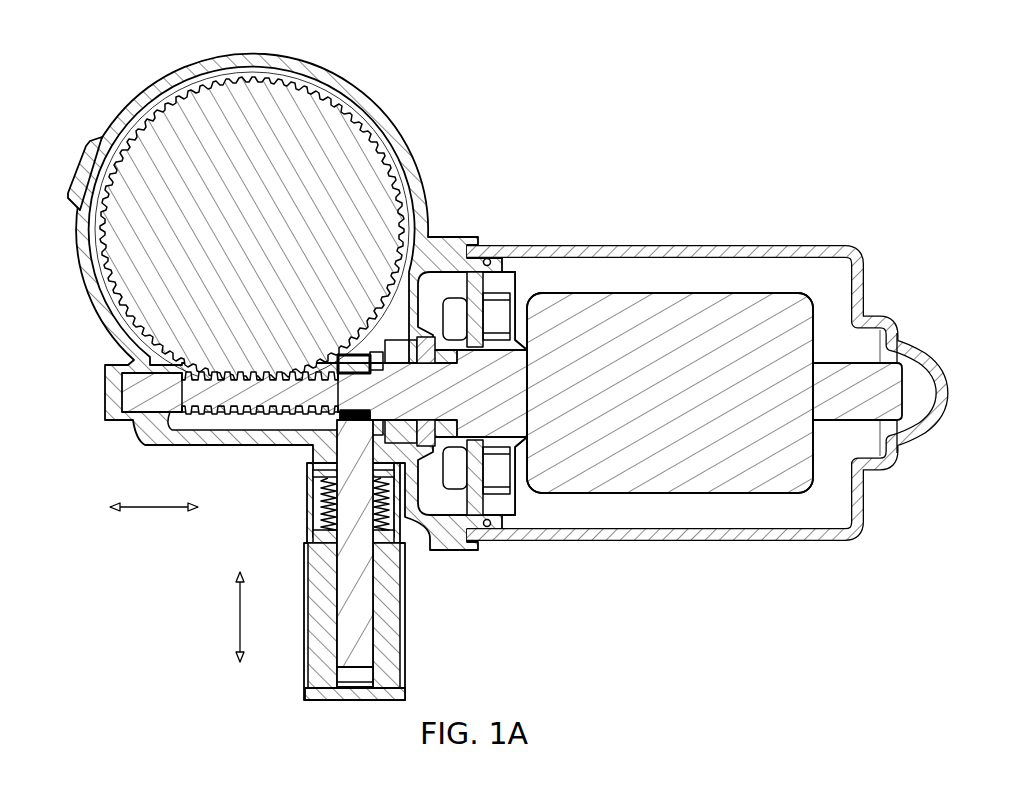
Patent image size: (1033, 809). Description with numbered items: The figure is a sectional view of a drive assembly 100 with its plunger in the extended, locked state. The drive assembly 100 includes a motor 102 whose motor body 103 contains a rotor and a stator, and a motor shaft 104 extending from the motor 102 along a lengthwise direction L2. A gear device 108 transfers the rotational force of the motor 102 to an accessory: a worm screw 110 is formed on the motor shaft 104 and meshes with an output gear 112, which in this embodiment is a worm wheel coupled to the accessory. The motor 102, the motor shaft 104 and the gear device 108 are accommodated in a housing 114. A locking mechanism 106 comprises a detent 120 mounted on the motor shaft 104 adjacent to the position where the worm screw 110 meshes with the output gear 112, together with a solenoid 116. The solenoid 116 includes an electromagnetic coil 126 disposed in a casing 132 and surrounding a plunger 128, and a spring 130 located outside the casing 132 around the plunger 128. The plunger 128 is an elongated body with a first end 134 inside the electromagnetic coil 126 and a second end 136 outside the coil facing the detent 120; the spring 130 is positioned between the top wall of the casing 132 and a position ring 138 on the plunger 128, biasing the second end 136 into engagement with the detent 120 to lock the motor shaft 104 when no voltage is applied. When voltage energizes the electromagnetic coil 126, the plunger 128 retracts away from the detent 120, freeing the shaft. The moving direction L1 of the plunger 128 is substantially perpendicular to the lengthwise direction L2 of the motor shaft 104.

The drive assembly 100 is at (512, 206).
The motor 102 is at (652, 293).
The motor body 103 is at (716, 320).
The motor shaft 104 is at (177, 395).
The locking mechanism 106 is at (303, 524).
The gear device 108 is at (73, 268).
The worm screw 110 is at (240, 395).
The output gear 112 is at (332, 130).
The housing 114 is at (828, 246).
The solenoid 116 is at (405, 589).
The detent 120 is at (344, 362).
The electromagnetic coil 126 is at (322, 608).
The plunger 128 is at (355, 566).
The spring 130 is at (322, 508).
The casing 132 is at (405, 661).
The first end 134 is at (362, 678).
The second end 136 is at (356, 425).
The position ring 138 is at (318, 477).
The moving direction of the plunger L1 is at (228, 617).
The lengthwise direction of the motor shaft L2 is at (154, 496).